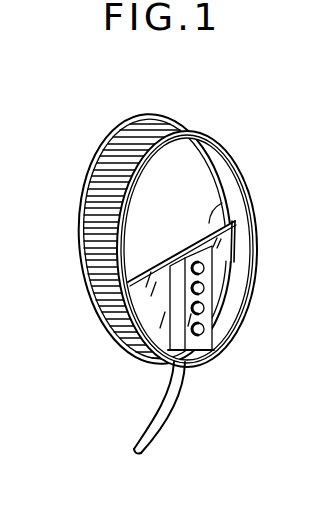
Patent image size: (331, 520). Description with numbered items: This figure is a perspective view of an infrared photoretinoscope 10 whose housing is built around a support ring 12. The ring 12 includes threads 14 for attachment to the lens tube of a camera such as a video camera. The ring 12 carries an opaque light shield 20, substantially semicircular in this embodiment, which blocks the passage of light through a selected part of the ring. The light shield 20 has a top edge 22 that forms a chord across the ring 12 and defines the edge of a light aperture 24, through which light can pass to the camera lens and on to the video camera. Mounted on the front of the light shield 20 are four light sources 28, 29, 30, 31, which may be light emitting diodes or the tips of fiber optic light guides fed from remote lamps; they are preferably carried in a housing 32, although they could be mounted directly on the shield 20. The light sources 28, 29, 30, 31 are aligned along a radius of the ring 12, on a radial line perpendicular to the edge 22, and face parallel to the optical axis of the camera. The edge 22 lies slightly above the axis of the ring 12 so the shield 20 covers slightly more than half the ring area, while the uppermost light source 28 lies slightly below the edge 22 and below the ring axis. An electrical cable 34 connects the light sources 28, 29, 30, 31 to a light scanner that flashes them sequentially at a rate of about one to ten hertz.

The infrared photoretinoscope 10 is at (251, 152).
The support ring 12 is at (97, 261).
The threads 14 is at (88, 182).
The opaque light shield 20 is at (221, 298).
The top edge 22 is at (222, 202).
The light aperture 24 is at (185, 168).
The light source 28 is at (206, 266).
The light source 29 is at (206, 288).
The light source 30 is at (208, 320).
The light source 31 is at (196, 360).
The housing 32 is at (153, 366).
The electrical cable 34 is at (170, 412).